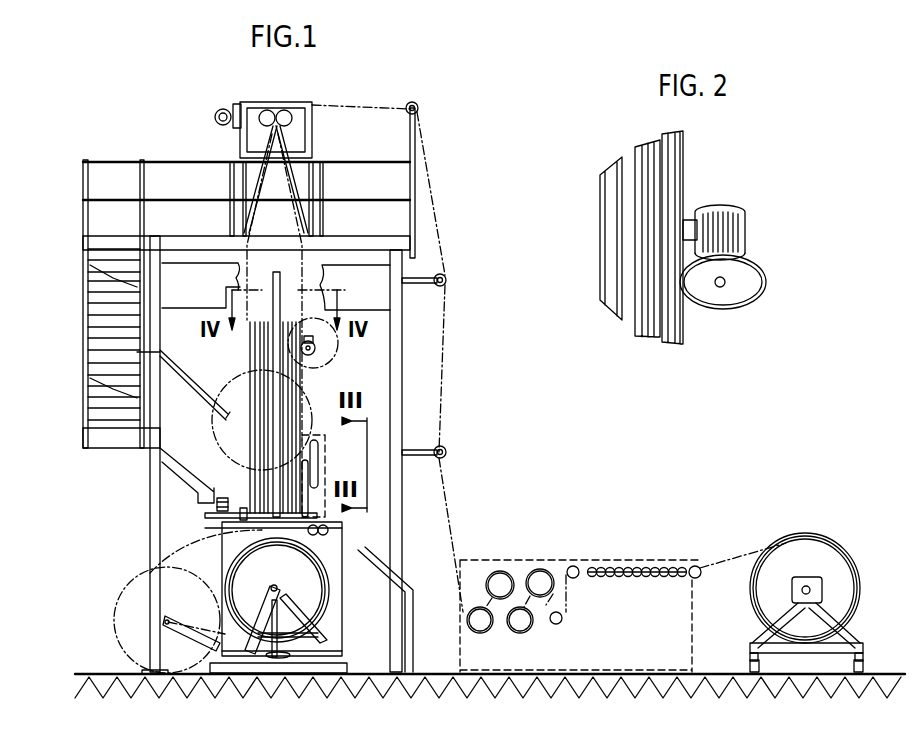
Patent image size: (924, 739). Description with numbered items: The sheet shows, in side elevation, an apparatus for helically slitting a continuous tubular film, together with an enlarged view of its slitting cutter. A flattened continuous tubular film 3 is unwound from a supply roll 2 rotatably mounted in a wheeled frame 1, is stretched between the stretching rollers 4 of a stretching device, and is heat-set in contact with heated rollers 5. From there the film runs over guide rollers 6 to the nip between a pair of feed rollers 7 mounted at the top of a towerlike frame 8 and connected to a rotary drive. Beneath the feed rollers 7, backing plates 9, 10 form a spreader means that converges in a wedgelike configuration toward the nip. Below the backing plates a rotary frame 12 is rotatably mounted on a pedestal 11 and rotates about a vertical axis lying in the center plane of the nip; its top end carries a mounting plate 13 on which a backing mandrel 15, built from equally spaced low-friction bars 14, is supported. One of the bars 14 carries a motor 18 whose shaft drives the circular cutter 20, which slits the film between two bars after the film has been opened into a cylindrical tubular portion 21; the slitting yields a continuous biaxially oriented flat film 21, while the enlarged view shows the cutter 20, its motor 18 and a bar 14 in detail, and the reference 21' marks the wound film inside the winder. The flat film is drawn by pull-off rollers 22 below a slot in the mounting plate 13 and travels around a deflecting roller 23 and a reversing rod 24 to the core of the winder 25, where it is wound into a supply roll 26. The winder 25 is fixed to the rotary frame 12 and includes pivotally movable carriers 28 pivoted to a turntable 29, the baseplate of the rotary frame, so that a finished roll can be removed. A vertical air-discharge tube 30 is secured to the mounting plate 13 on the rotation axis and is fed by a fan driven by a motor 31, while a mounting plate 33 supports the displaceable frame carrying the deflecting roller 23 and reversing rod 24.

In FIG. 1, the wheeled frame 1 is at (848, 630).
In FIG. 1, the supply roll 2 is at (794, 542).
In FIG. 1, the continuous tubular film 3 is at (441, 398).
In FIG. 1, the stretching rollers 4 is at (602, 567).
In FIG. 1, the heated rollers 5 is at (500, 582).
In FIG. 1, the guide rollers 6 is at (419, 105).
In FIG. 1, the feed rollers 7 is at (283, 110).
In FIG. 1, the towerlike frame 8 is at (188, 240).
In FIG. 1, the backing plate 9 is at (298, 180).
In FIG. 1, the backing plate 10 is at (258, 192).
In FIG. 1, the pedestal 11 is at (347, 664).
In FIG. 1, the rotary frame 12 is at (343, 589).
In FIG. 1, the mounting plate 13 is at (231, 471).
In FIG. 1, the low-friction bars 14 is at (262, 355).
In FIG. 2, the low-friction bars 14 is at (684, 162).
In FIG. 1, the backing mandrel 15 is at (232, 383).
In FIG. 2, the motor 18 is at (738, 226).
In FIG. 2, the circular cutter 20 is at (740, 296).
In FIG. 1, the cylindrical tubular portion / flat film 21 is at (339, 316).
In FIG. 1, the inner ring 21' is at (277, 590).
In FIG. 1, the pull-off rollers 22 is at (326, 536).
In FIG. 1, the deflecting roller 23 is at (318, 450).
In FIG. 1, the reversing rod 24 is at (320, 470).
In FIG. 1, the winder 25 is at (350, 611).
In FIG. 1, the supply roll 26 is at (310, 600).
In FIG. 1, the pivotally movable carriers 28 is at (268, 598).
In FIG. 1, the turntable 29 is at (208, 656).
In FIG. 1, the air-discharge tube 30 is at (273, 290).
In FIG. 1, the motor 31 is at (226, 464).
In FIG. 1, the mounting plate 33 is at (215, 512).